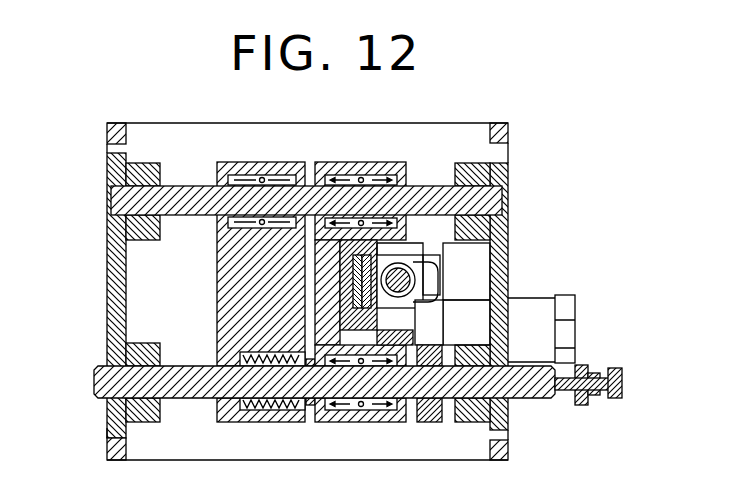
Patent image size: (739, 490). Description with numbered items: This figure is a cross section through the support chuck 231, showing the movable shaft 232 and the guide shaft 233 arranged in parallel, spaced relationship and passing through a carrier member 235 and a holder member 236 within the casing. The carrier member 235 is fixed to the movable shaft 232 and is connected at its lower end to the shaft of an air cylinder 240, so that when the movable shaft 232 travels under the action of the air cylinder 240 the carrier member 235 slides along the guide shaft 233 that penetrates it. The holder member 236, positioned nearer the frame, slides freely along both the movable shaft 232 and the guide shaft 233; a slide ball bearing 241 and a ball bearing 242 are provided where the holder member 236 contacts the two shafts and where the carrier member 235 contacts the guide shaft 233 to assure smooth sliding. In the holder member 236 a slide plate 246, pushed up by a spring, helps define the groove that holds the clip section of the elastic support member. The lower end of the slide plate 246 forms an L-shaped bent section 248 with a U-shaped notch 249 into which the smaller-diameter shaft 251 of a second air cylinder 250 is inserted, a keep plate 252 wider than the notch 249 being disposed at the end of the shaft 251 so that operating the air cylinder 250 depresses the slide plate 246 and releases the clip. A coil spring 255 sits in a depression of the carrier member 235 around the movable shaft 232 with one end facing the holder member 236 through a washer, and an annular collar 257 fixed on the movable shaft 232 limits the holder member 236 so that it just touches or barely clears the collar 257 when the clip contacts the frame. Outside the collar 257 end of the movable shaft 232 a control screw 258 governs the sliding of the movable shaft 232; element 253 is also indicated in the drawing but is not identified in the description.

The support chuck 231 is at (194, 111).
The movable shaft 232 is at (183, 372).
The guide shaft 233 is at (112, 200).
The carrier member 235 is at (218, 275).
The holder member 236 is at (318, 165).
The air cylinder 240 is at (541, 298).
The slide ball bearing 241 is at (360, 172).
The ball bearing 242 is at (243, 170).
The slide plate 246 is at (362, 356).
The bent section 248 is at (411, 258).
The U-shaped notch 249 is at (418, 279).
The air cylinder 250 is at (367, 308).
The shaft 251 is at (416, 266).
The keep plate 252 is at (431, 296).
The spacer 253 is at (216, 399).
The coil spring 255 is at (252, 408).
The annular collar 257 is at (425, 423).
The control screw 258 is at (609, 370).